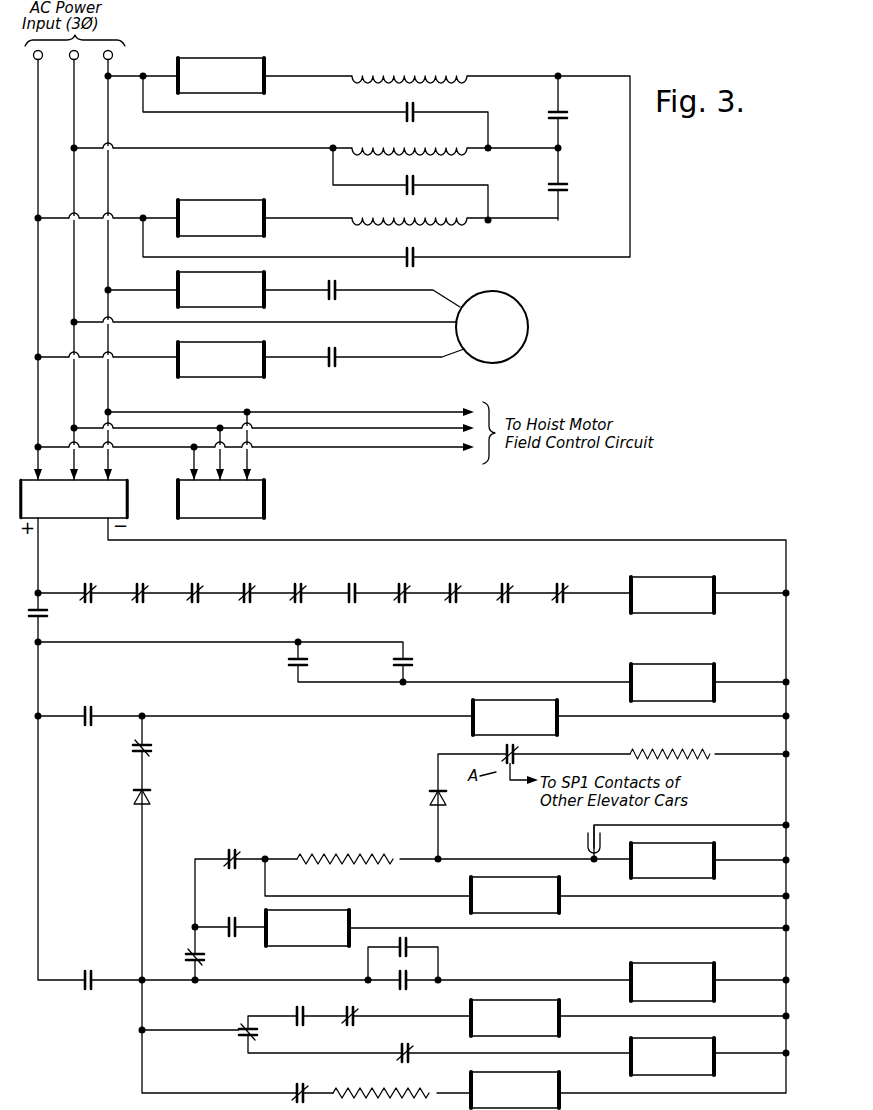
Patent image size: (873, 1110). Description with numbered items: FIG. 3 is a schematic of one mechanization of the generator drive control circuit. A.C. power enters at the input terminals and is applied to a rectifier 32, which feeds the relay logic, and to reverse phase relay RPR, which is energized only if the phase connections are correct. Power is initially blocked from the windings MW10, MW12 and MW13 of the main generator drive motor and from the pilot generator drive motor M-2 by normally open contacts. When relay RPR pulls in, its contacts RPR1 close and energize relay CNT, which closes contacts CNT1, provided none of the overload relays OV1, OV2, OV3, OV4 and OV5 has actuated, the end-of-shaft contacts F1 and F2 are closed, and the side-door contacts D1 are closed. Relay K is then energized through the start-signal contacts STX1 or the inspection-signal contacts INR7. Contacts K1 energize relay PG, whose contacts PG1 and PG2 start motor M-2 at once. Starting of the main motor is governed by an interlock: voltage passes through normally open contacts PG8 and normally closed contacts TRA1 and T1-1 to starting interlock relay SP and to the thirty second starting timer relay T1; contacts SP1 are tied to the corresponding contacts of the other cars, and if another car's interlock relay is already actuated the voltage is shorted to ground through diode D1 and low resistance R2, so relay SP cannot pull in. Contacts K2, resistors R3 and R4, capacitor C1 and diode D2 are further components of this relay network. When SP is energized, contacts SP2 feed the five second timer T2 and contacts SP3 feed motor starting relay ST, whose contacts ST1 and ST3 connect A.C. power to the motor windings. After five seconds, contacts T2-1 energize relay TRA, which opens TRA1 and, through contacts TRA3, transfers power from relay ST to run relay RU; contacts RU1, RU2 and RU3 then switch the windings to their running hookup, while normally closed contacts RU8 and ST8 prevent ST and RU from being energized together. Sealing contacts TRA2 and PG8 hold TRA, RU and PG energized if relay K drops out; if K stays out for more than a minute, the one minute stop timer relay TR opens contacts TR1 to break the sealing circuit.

The rectifier 32 is at (147, 479).
The overload relay OV1 is at (167, 330).
The overload relay OV2 is at (193, 401).
The overload relay OV3 is at (195, 583).
The overload relay OV4 is at (221, 437).
The overload relay OV5 is at (246, 472).
The winding MW10 is at (352, 72).
The winding MW12 is at (360, 128).
The winding MW13 is at (365, 198).
The run relay contacts RU1 is at (430, 250).
The run relay contacts RU2 is at (430, 105).
The run relay contacts RU3 is at (430, 178).
The starting relay contacts ST1 is at (574, 187).
The starting relay contacts ST3 is at (574, 115).
The pilot generator relay contacts PG1 is at (350, 283).
The pilot generator relay contacts PG2 is at (350, 350).
The pilot generator drive motor M-2 is at (492, 327).
The reverse phase relay RPR is at (221, 499).
The reverse phase relay contacts RPR1 is at (352, 583).
The car limit contacts F1 is at (402, 583).
The car limit contacts F2 is at (453, 583).
The diode / side door contacts D1 is at (473, 686).
The diode / contact D2 is at (332, 685).
The relay CNT is at (672, 595).
The relay contacts CNT1 is at (62, 614).
The contact STX1 is at (291, 642).
The contact INR7 is at (378, 642).
The relay K is at (672, 682).
The relay contacts K1 is at (101, 706).
The contact K2 is at (299, 1083).
The stop timer contacts TR1 is at (162, 747).
The pilot generator relay PG is at (515, 717).
The normally open contacts PG8 is at (87, 970).
The starting interlock contacts SP1 is at (524, 759).
The starting interlock contacts SP2 is at (229, 917).
The starting interlock contacts SP3 is at (296, 1007).
The starting interlock relay SP is at (672, 860).
The low resistance R2 is at (670, 745).
The resistor R3 is at (345, 847).
The resistor R4 is at (381, 1081).
The normally closed timer contacts T1-1 is at (232, 849).
The starting timer relay T1 is at (515, 895).
The timer T2 is at (307, 928).
The timer contacts T2-1 is at (410, 945).
The capacitor / plug C1 is at (570, 839).
The relay TRA is at (672, 982).
The normally closed contacts TRA1 is at (217, 957).
The sealing contacts TRA2 is at (402, 990).
The transfer contacts TRA3 is at (220, 1024).
The motor starting relay ST is at (515, 1018).
The normally closed contacts ST8 is at (402, 1045).
The run relay RU is at (672, 1056).
The normally closed contacts RU8 is at (345, 1007).
The stop timer relay TR is at (515, 1090).